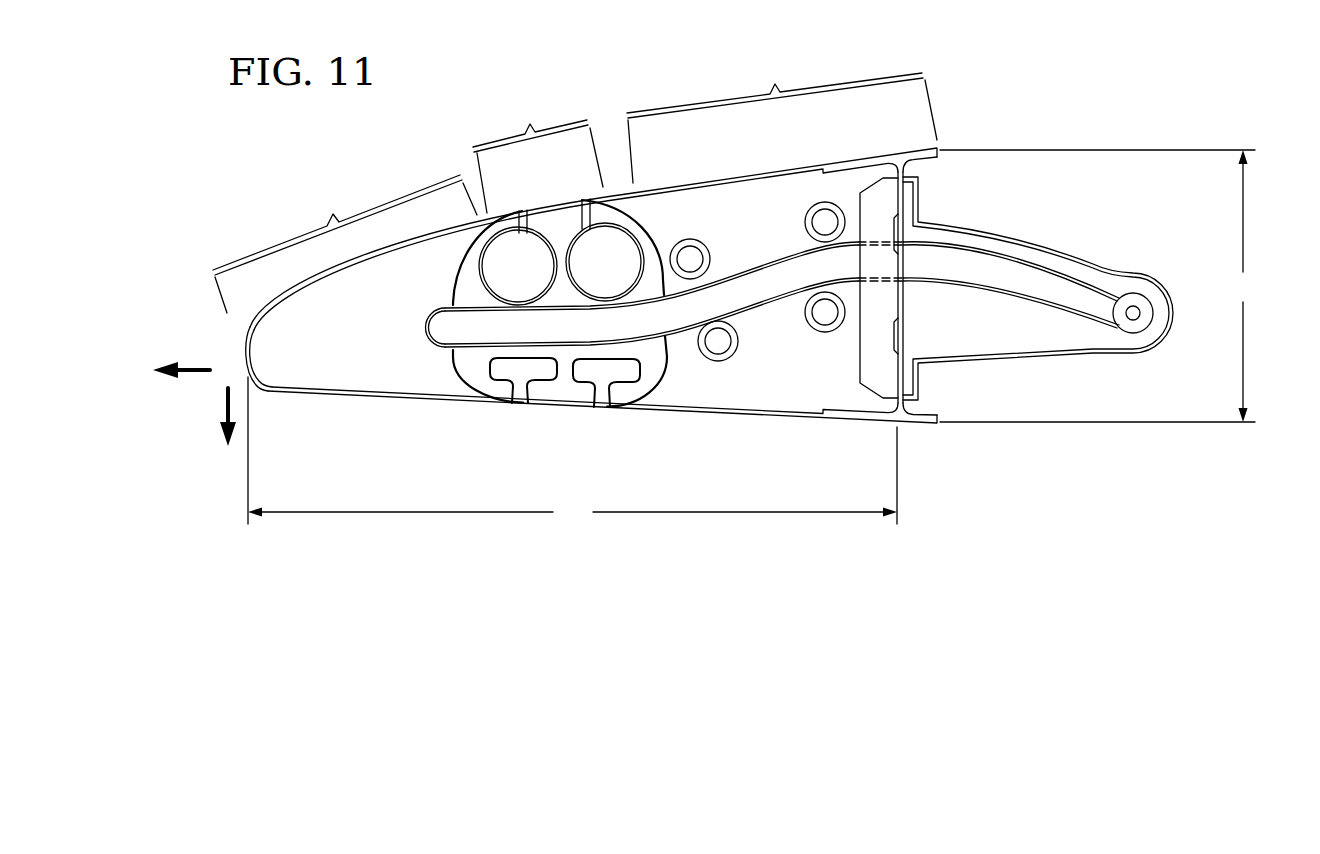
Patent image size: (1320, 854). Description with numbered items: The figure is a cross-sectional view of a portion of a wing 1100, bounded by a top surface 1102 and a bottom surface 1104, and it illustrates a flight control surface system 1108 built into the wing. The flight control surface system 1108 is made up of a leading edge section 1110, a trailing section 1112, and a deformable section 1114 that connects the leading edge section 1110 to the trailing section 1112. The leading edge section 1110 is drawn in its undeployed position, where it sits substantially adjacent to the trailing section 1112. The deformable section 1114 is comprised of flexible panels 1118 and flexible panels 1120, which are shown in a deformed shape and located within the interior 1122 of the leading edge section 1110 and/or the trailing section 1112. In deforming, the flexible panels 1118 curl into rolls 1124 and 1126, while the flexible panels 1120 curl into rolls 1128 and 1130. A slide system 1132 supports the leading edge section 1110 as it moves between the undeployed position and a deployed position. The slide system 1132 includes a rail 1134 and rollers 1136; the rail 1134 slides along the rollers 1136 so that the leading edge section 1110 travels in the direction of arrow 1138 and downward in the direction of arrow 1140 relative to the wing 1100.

The wing 1100 is at (1038, 96).
The top surface 1102 is at (806, 160).
The bottom surface 1104 is at (783, 425).
The flight control surface system 1108 is at (1101, 221).
The leading edge section 1110 is at (345, 244).
The trailing section 1112 is at (782, 118).
The deformable section 1114 is at (538, 155).
The flexible panels 1118 is at (553, 205).
The flexible panels 1120 is at (570, 405).
The interior 1122 is at (310, 343).
The roll 1124 is at (477, 266).
The roll 1126 is at (628, 217).
The roll 1128 is at (482, 368).
The roll 1130 is at (655, 375).
The slide system 1132 is at (1047, 326).
The rail 1134 is at (985, 243).
The rollers 1136 is at (816, 332).
The arrow 1138 is at (191, 368).
The arrow 1140 is at (224, 413).